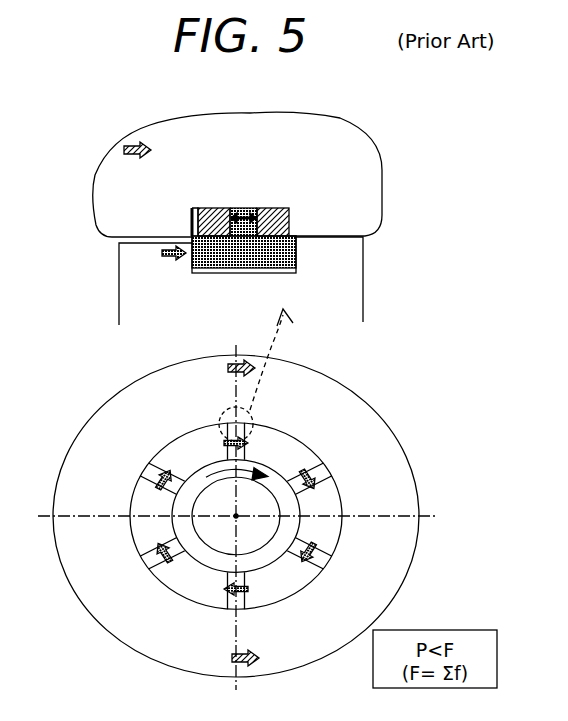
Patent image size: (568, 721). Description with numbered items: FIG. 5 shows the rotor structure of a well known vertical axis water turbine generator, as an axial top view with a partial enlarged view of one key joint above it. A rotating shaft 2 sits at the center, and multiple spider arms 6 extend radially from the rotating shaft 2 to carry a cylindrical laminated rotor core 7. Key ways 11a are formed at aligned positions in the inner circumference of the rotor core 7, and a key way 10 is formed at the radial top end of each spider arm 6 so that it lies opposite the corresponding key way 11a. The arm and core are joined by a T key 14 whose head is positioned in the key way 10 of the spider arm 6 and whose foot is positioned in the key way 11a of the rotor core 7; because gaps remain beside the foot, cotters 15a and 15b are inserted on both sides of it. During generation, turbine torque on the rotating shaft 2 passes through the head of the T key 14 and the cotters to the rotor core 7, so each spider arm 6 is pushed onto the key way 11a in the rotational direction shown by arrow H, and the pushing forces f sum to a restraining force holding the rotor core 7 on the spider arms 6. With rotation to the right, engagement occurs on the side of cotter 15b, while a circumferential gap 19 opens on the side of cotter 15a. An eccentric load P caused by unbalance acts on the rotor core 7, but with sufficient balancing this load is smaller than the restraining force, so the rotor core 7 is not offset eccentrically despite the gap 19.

The rotor core 7 is at (322, 148).
The spider arms 6 is at (135, 272).
The key way 10 is at (218, 272).
The cotter 15a is at (218, 208).
The cotter 15b is at (272, 207).
The T key 14 is at (242, 208).
The key way 11a is at (256, 206).
The circumferential gap 19 is at (196, 208).
The rotating shaft 2 is at (232, 541).
The eccentric load P is at (122, 157).
The pushing force f is at (172, 258).
The arrow indicating rotational direction H is at (248, 466).